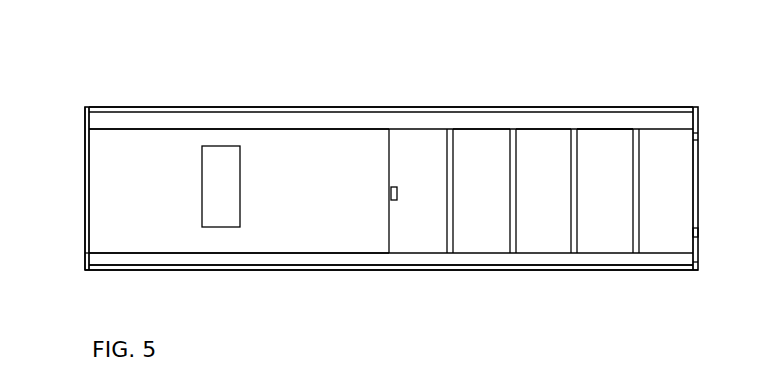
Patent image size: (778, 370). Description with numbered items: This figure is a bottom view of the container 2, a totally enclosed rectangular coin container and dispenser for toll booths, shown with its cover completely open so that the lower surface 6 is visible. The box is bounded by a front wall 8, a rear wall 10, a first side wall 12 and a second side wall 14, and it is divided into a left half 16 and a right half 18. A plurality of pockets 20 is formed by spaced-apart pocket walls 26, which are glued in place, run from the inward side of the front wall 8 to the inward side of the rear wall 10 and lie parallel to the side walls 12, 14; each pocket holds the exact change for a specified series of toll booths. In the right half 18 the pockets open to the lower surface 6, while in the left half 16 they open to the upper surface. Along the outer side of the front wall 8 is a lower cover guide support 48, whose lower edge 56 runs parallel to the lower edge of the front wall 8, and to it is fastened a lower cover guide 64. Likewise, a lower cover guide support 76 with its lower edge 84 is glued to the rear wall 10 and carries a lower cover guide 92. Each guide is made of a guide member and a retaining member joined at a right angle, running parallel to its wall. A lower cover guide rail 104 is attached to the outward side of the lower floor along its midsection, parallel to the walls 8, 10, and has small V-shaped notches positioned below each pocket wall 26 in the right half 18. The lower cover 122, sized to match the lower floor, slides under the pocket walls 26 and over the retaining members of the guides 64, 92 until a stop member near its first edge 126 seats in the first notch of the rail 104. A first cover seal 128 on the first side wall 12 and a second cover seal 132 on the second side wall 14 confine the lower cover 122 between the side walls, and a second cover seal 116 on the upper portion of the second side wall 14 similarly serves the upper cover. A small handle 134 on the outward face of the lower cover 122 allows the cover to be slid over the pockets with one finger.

The container 2 is at (424, 93).
The lower surface 6 is at (368, 248).
The front wall 8 is at (500, 93).
The rear wall 10 is at (457, 285).
The first side wall 12 is at (76, 177).
The second side wall 14 is at (693, 230).
The left half 16 is at (289, 95).
The right half 18 is at (580, 93).
The pockets 20 is at (593, 242).
The pocket walls 26 is at (515, 213).
The lower cover guide support 48 is at (225, 102).
The lower edge 56 is at (140, 102).
The lower cover guide 64 is at (363, 120).
The lower cover guide support 76 is at (177, 272).
The lower edge 84 is at (242, 270).
The lower cover guide 92 is at (307, 260).
The lower cover guide rail 104 is at (390, 193).
The second cover seal 116 is at (699, 132).
The lower cover 122 is at (338, 232).
The first edge 126 is at (90, 198).
The first cover seal 128 is at (83, 257).
The second cover seal 132 is at (700, 207).
The handle 134 is at (235, 189).